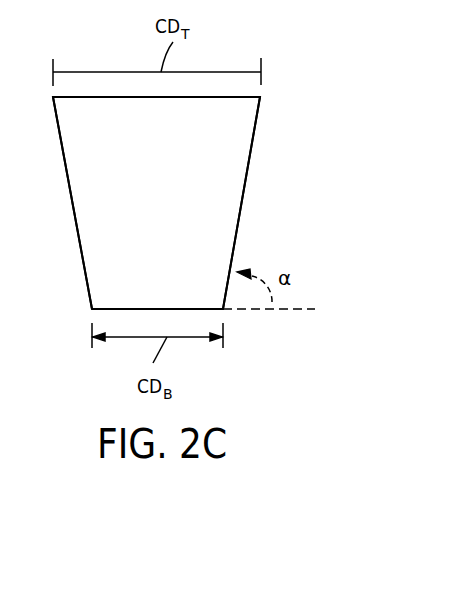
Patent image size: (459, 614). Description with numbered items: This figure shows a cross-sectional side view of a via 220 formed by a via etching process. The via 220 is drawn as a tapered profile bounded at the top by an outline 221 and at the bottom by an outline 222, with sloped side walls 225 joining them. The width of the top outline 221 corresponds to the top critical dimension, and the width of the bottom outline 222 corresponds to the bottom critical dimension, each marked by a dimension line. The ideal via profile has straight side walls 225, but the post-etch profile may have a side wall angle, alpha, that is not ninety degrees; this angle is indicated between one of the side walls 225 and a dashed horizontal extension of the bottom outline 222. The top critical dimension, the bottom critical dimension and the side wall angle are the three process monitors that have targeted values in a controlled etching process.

The via 220 is at (288, 149).
The outline 221 is at (252, 97).
The outline 222 is at (203, 310).
The side walls 225 is at (238, 216).